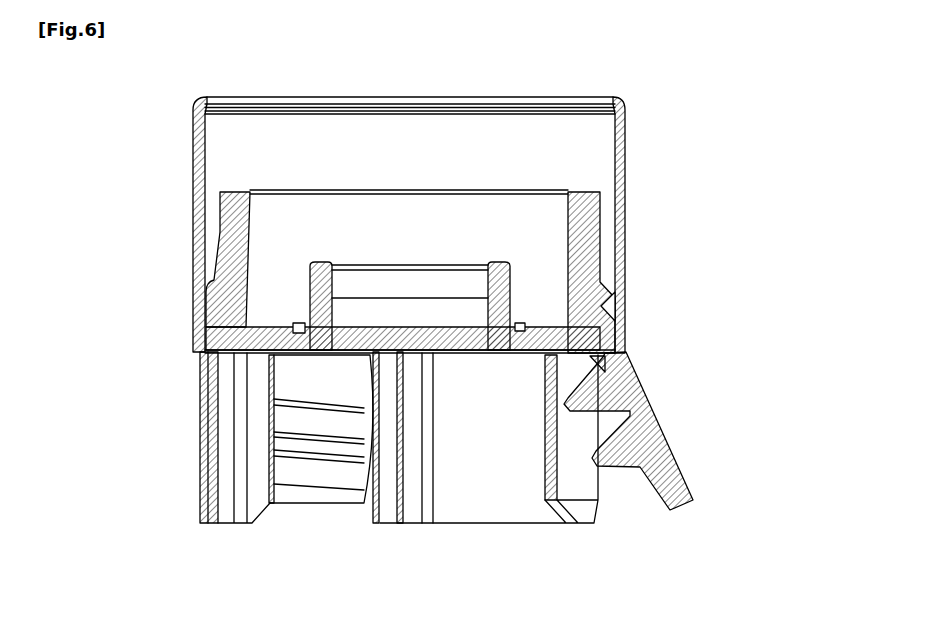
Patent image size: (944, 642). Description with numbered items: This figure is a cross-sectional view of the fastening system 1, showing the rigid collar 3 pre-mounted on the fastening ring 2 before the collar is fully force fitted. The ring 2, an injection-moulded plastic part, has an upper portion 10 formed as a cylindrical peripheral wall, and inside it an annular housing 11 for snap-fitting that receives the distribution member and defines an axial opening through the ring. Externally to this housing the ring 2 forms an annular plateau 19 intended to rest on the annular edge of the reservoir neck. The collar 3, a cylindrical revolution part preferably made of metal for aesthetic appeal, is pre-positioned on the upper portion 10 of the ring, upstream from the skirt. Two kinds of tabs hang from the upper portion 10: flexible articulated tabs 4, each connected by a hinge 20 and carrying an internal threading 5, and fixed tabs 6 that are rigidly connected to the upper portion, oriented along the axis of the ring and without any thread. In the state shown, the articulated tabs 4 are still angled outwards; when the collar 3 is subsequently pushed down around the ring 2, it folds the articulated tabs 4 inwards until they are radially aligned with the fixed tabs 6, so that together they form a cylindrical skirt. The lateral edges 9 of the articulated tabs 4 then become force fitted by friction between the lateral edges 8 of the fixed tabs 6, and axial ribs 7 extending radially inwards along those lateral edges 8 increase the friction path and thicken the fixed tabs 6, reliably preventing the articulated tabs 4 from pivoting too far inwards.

The fastening system 1 is at (770, 109).
The fastening ring 2 is at (623, 283).
The rigid collar 3 is at (625, 172).
The articulated tabs 4 is at (677, 437).
The internal threading 5 is at (315, 472).
The fixed tabs 6 is at (212, 440).
The axial ribs 7 is at (264, 404).
The lateral edges of the fixed tabs 8 is at (387, 489).
The lateral edges of the articulated tabs 9 is at (376, 452).
The upper portion of the ring 10 is at (212, 262).
The annular housing 11 is at (308, 296).
The annular plateau 19 is at (627, 315).
The hinge 20 is at (625, 347).